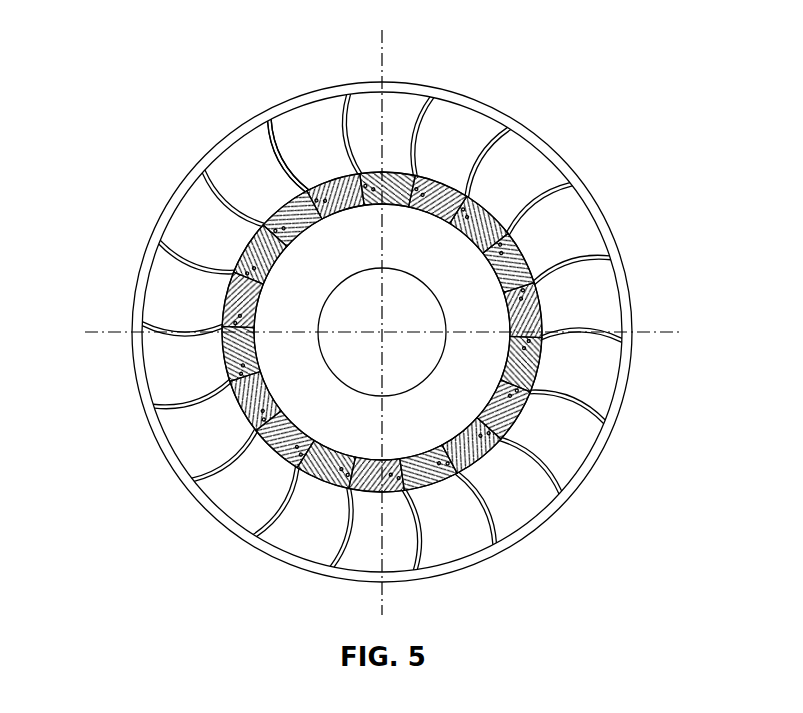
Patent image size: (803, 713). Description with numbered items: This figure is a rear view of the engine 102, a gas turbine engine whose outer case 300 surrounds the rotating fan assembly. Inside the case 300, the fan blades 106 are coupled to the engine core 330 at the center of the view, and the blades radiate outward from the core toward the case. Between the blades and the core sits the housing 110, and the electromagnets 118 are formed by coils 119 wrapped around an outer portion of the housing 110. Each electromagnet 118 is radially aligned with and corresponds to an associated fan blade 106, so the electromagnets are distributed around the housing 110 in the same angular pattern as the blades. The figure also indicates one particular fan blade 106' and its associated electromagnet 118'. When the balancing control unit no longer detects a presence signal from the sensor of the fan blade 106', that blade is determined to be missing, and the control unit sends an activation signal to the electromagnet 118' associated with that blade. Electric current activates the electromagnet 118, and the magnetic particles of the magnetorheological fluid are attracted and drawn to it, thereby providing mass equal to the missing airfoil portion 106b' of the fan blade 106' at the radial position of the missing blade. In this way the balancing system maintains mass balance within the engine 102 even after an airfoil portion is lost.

The engine 102 is at (165, 80).
The case 300 is at (527, 108).
The fan blade 106 is at (398, 339).
The fan blade 106' is at (303, 116).
The missing airfoil portion 106b' is at (253, 132).
The electromagnet 118 is at (458, 271).
The electromagnet 118' is at (287, 332).
The housing 110 is at (230, 377).
The coils 119 is at (500, 230).
The engine core 330 is at (447, 322).